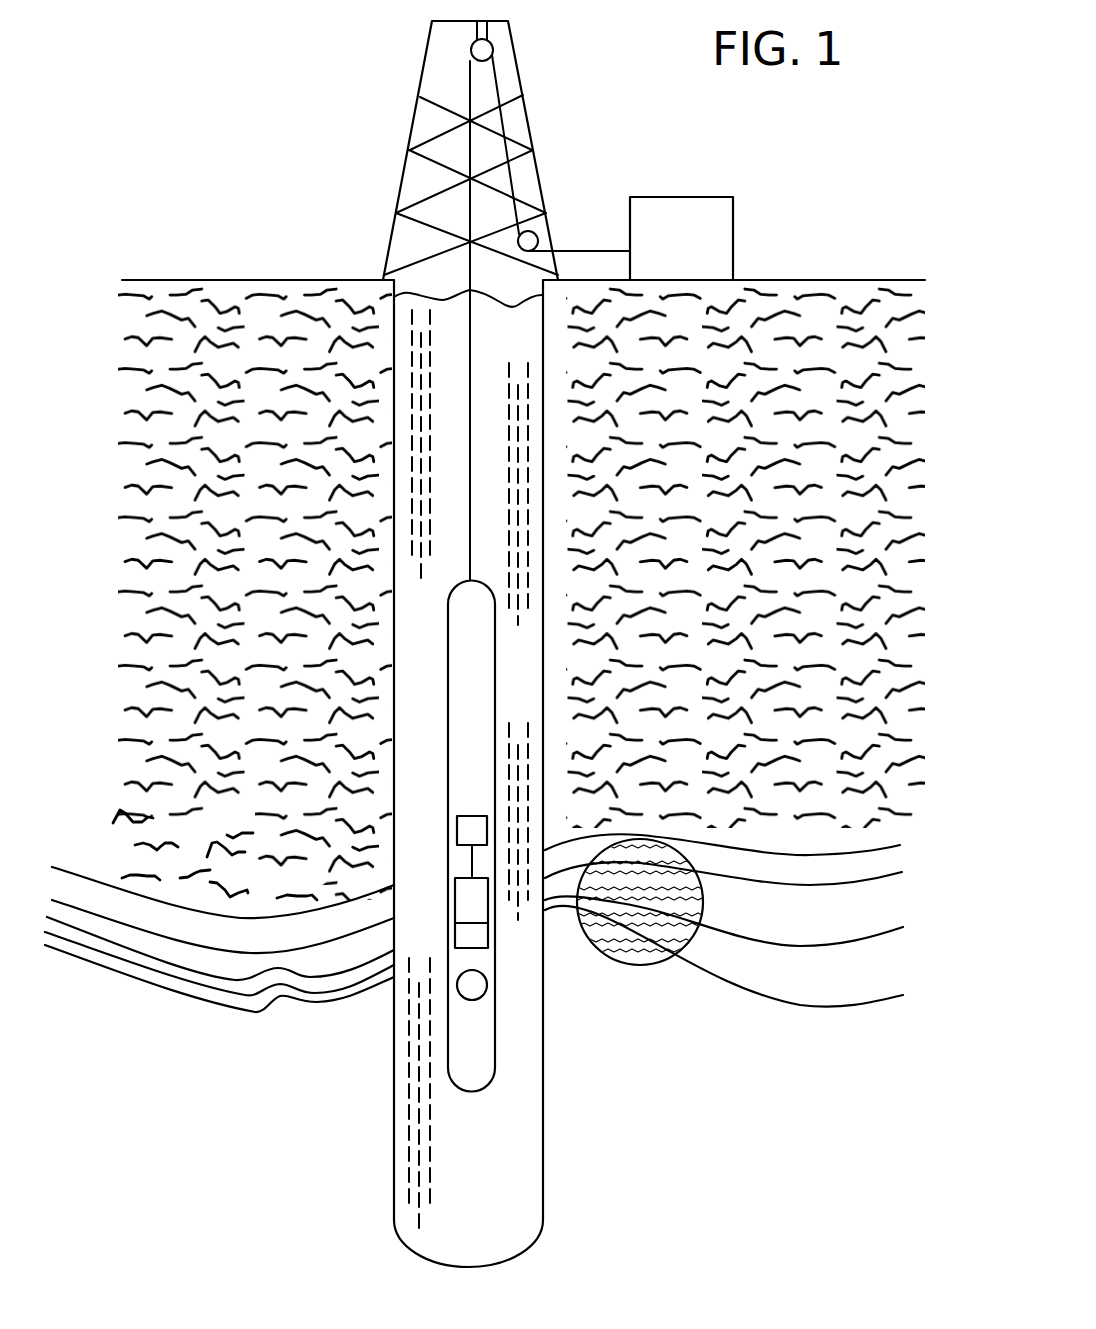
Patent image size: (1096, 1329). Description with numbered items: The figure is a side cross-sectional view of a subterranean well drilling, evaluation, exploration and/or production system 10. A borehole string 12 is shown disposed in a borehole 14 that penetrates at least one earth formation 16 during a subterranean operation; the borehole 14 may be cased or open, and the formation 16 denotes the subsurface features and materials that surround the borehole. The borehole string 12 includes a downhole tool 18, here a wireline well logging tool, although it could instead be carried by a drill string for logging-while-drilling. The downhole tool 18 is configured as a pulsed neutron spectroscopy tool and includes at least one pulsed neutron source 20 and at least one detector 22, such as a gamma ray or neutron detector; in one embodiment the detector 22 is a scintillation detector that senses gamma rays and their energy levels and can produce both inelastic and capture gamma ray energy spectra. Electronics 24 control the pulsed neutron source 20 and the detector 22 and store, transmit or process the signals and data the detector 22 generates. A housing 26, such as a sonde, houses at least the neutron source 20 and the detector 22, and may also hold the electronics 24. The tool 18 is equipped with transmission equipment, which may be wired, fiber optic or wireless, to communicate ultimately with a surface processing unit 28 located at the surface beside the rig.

The subterranean well drilling, evaluation, exploration and/or production system 10 is at (232, 224).
The borehole string 12 is at (442, 598).
The borehole 14 is at (532, 1100).
The earth formation 16 is at (785, 918).
The downhole tool 18 is at (448, 697).
The pulsed neutron source 20 is at (456, 985).
The detector 22 is at (470, 910).
The electronics 24 is at (472, 830).
The housing 26 is at (473, 713).
The surface processing unit 28 is at (667, 197).